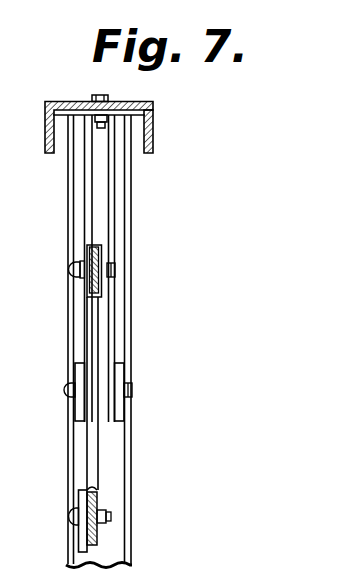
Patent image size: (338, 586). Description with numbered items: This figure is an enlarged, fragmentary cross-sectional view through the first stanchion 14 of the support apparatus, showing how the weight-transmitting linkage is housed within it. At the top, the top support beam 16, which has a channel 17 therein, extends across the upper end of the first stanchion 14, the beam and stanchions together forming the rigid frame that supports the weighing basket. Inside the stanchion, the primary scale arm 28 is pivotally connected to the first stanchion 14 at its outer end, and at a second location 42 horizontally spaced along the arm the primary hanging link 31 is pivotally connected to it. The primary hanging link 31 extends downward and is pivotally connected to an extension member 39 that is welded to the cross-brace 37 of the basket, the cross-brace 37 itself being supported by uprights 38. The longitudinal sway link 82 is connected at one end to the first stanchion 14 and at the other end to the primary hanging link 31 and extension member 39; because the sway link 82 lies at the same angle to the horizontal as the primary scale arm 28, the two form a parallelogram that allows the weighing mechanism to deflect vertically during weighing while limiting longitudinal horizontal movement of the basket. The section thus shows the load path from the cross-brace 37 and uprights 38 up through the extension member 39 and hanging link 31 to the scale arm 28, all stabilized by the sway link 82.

The first stanchion 14 is at (71, 183).
The top support beam 16 is at (97, 130).
The channel 17 is at (144, 148).
The primary scale arm 28 is at (88, 246).
The primary hanging link 31 is at (96, 333).
The cross-brace 37 is at (98, 546).
The uprights 38 is at (84, 550).
The extension member 39 is at (99, 472).
The second location 42 is at (75, 287).
The longitudinal sway link 82 is at (74, 413).